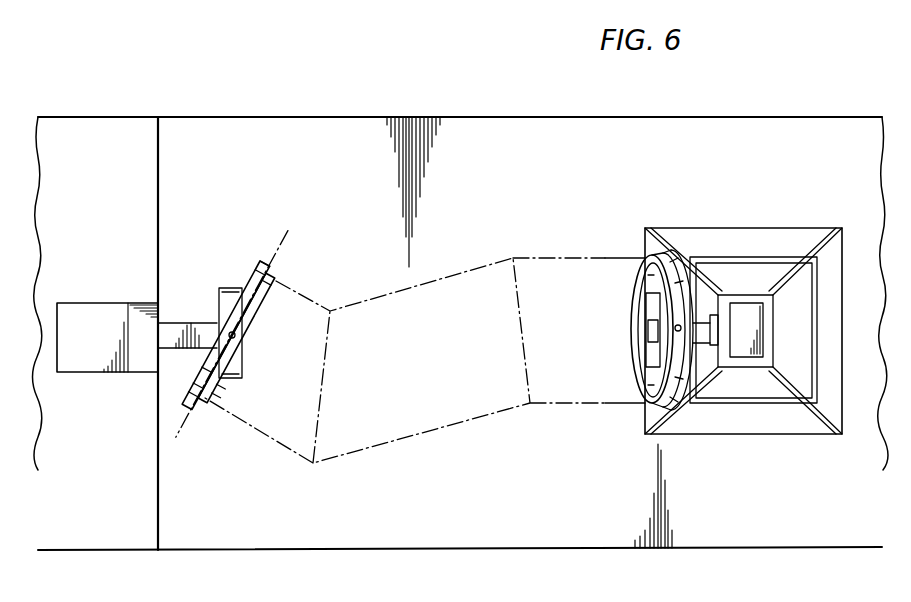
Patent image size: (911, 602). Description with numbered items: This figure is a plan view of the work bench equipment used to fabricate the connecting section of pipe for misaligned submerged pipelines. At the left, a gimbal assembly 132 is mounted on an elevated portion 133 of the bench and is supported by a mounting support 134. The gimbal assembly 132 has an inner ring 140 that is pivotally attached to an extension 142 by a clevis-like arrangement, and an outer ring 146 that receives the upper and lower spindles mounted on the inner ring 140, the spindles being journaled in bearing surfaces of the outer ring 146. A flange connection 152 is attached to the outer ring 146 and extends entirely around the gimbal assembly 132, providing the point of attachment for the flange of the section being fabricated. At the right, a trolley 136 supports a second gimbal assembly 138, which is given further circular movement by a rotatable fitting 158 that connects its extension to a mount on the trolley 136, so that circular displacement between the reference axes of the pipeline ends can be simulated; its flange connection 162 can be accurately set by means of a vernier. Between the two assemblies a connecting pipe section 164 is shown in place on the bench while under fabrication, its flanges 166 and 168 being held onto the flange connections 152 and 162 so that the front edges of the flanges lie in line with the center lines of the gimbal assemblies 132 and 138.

The gimbal assembly 132 is at (258, 344).
The elevated portion 133 is at (160, 515).
The mounting support 134 is at (128, 358).
The trolley 136 is at (742, 435).
The second gimbal assembly 138 is at (603, 199).
The inner ring 140 is at (242, 369).
The extension 142 is at (190, 323).
The outer ring 146 is at (278, 277).
The flange connection 152 is at (265, 262).
The rotatable fitting 158 is at (722, 327).
The flange connection 162 is at (678, 252).
The connecting pipe section 164 is at (443, 288).
The flange 166 is at (272, 262).
The flange 168 is at (655, 251).